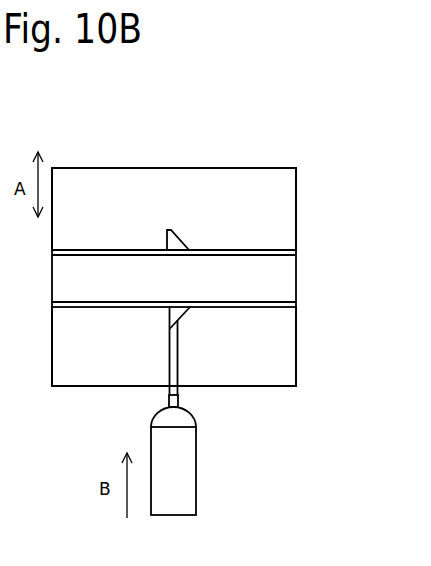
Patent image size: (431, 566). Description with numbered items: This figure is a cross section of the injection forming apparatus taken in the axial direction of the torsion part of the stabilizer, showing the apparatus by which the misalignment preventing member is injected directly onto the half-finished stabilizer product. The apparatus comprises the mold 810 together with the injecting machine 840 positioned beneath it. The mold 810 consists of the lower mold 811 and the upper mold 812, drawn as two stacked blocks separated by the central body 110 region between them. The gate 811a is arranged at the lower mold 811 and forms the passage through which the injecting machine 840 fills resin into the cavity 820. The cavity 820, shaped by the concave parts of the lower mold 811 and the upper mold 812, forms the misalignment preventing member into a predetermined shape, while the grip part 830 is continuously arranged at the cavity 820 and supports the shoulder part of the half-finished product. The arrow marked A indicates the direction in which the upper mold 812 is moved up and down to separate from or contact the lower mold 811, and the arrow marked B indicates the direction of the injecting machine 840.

The case 110 is at (66, 275).
The mold 810 is at (237, 277).
The lower mold 811 is at (207, 346).
The gate 811a is at (178, 338).
The upper mold 812 is at (273, 226).
The cavity 820 is at (183, 229).
The grip part 830 is at (110, 250).
The injecting machine 840 is at (197, 468).